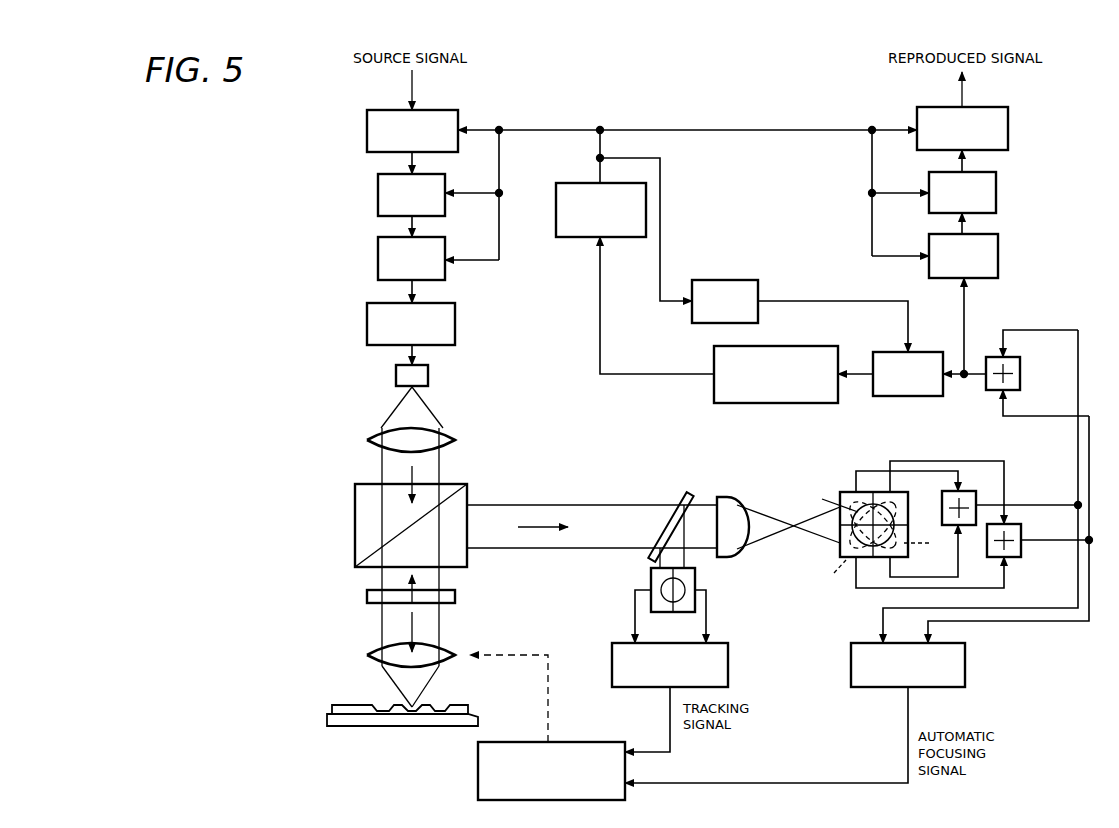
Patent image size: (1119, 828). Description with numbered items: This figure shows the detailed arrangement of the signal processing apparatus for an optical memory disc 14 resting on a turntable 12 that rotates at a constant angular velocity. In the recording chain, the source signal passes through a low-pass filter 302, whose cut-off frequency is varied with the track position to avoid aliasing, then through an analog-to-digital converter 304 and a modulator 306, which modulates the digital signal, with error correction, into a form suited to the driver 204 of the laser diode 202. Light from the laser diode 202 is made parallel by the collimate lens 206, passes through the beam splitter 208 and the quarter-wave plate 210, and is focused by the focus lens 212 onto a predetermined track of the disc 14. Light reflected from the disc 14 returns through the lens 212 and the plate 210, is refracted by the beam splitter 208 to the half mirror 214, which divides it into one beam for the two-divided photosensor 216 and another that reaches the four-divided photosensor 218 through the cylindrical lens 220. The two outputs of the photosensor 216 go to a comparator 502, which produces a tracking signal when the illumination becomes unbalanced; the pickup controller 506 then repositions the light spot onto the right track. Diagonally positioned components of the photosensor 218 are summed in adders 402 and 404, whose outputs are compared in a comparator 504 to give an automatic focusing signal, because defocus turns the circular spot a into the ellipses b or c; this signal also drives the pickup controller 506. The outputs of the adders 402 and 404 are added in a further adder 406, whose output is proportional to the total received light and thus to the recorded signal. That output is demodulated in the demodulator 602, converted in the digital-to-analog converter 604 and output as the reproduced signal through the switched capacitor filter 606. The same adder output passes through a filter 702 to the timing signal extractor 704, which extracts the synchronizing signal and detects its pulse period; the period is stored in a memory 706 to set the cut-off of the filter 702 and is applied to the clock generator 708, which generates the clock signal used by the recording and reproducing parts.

The turntable 12 is at (358, 726).
The memory disc 14 is at (344, 708).
The laser diode 202 is at (396, 377).
The driver 204 is at (367, 320).
The collimate lens 206 is at (374, 440).
The beam splitter 208 is at (355, 500).
The quarter-wave plate 210 is at (367, 600).
The focus lens 212 is at (375, 650).
The half mirror 214 is at (678, 498).
The 2-divided photosensor 216 is at (651, 581).
The 4-divided photosensor 218 is at (850, 492).
The cylindrical lens 220 is at (734, 497).
The filter 302 is at (367, 124).
The analog-to-digital converter 304 is at (378, 190).
The modulator 306 is at (378, 252).
The adder 402 is at (984, 489).
The adder 404 is at (1021, 550).
The adder 406 is at (1020, 376).
The comparator 502 is at (716, 643).
The comparator 504 is at (965, 652).
The pickup controller 506 is at (600, 742).
The demodulator 602 is at (998, 248).
The digital-to-analog converter 604 is at (996, 182).
The filter 606 is at (1008, 117).
The filter 702 is at (925, 396).
The timing signal extractor 704 is at (822, 346).
The memory 706 is at (750, 280).
The clock generator 708 is at (580, 183).